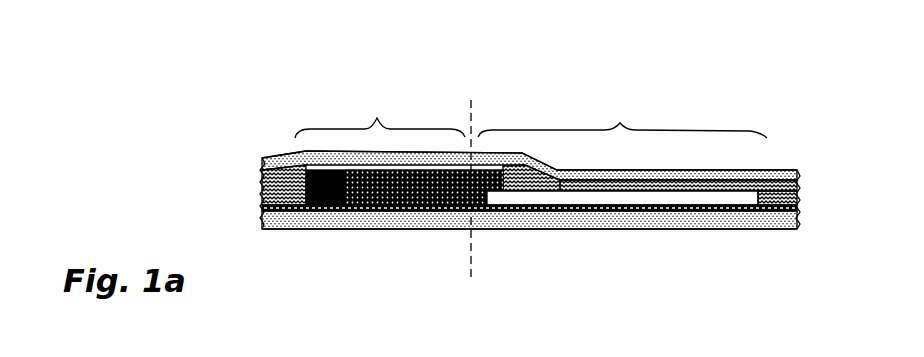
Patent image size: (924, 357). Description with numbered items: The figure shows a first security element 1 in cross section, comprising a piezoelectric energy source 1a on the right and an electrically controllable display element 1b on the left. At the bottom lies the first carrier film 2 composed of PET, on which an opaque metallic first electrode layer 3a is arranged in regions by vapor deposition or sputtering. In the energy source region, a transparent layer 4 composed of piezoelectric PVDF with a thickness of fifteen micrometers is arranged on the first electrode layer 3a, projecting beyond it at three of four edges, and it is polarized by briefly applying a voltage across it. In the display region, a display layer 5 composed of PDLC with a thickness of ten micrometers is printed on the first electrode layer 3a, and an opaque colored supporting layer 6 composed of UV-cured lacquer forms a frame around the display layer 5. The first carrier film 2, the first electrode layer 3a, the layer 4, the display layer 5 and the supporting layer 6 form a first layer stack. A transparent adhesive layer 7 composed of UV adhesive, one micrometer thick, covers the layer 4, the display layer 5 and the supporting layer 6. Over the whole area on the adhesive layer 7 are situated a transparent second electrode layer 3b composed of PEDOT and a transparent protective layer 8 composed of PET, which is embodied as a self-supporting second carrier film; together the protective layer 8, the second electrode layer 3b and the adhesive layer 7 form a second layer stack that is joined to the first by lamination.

The security element 1 is at (822, 199).
The piezoelectric energy source 1a is at (621, 115).
The electrically controllable display element 1b is at (376, 112).
The first carrier film 2 is at (345, 216).
The first electrode layer 3a is at (630, 211).
The second electrode layer 3b is at (259, 174).
The layer composed of piezoelectric material 4 is at (748, 200).
The display layer 5 is at (410, 207).
The supporting layer 6 is at (312, 207).
The adhesive layer 7 is at (531, 190).
The protective layer 8 is at (259, 167).